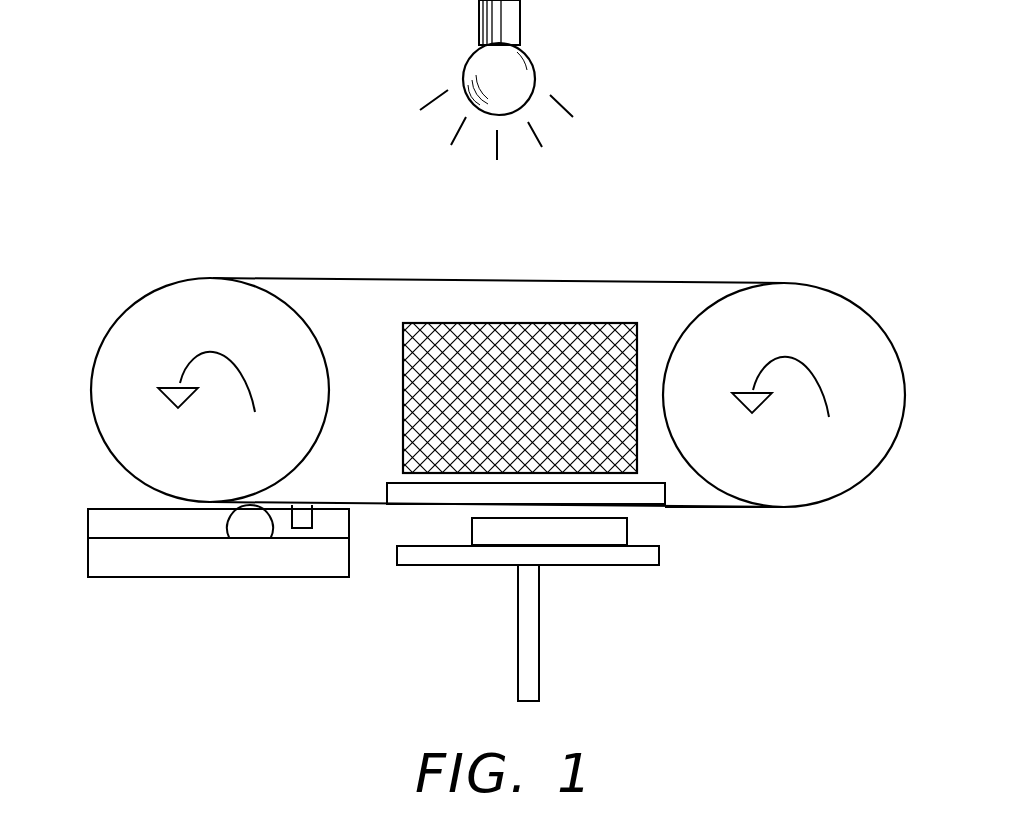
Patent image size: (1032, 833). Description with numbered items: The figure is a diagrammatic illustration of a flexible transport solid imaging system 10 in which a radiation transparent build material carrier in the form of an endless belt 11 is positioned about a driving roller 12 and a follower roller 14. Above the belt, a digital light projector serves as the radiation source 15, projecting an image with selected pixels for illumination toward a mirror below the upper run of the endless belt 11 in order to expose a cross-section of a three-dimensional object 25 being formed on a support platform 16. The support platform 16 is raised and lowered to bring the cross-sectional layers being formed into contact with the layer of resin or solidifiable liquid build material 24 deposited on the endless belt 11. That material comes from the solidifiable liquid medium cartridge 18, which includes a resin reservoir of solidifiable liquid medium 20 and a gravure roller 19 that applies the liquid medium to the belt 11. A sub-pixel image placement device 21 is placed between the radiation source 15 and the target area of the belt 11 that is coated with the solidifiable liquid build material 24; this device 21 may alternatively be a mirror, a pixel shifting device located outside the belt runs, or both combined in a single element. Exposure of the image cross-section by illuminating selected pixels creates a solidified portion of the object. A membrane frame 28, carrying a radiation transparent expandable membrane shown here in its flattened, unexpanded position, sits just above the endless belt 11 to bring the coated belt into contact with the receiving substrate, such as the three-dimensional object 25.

The flexible transport imaging system 10 is at (180, 253).
The endless belt 11 is at (313, 277).
The driving roller 12 is at (317, 335).
The follower roller 14 is at (687, 332).
The radiation source 15 is at (533, 60).
The support platform 16 is at (477, 565).
The solidifiable liquid medium cartridge 18 is at (178, 595).
The gravure roller 19 is at (238, 530).
The resin reservoir of solidifiable liquid medium 20 is at (102, 563).
The sub-pixel image placement device 21 is at (567, 323).
The solidifiable liquid build material 24 is at (765, 507).
The three-dimensional object 25 is at (628, 530).
The membrane frame 28 is at (665, 497).